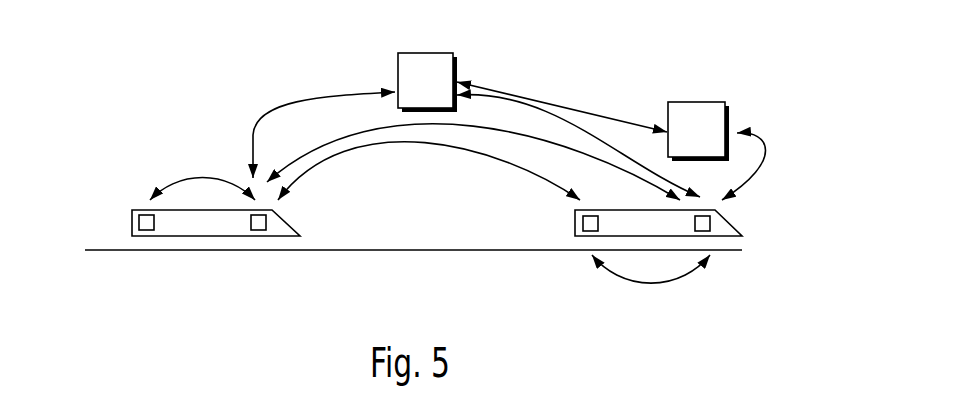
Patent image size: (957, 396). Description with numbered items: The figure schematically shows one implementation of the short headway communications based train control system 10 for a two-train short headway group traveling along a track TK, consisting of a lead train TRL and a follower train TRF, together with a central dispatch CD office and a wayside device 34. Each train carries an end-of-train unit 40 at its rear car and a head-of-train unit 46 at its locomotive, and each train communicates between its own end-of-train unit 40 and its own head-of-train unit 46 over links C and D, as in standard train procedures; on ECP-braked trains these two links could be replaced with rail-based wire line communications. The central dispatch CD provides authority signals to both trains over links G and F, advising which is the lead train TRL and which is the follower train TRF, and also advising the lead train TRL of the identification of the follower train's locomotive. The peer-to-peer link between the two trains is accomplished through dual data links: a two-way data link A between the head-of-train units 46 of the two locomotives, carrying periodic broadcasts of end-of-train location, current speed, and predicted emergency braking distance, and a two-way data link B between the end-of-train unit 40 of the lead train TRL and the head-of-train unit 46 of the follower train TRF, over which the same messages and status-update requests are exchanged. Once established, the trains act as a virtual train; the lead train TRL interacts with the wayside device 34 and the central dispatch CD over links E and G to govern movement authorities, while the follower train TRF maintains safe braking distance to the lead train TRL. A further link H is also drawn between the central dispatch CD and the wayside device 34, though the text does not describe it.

The short headway communications based train control system 10 is at (203, 91).
The wayside device 34 is at (698, 131).
The central dispatch CD is at (427, 82).
The end-of-train unit 40 is at (147, 237).
The head-of-train unit 46 is at (258, 237).
The two-way data link A is at (318, 148).
The two-way data link B is at (433, 145).
The link C is at (658, 283).
The link D is at (200, 177).
The link E is at (767, 150).
The link F is at (285, 100).
The link G is at (578, 127).
The communication link H is at (524, 92).
The track TK is at (428, 250).
The follower train TRF is at (296, 228).
The lead train TRL is at (742, 237).